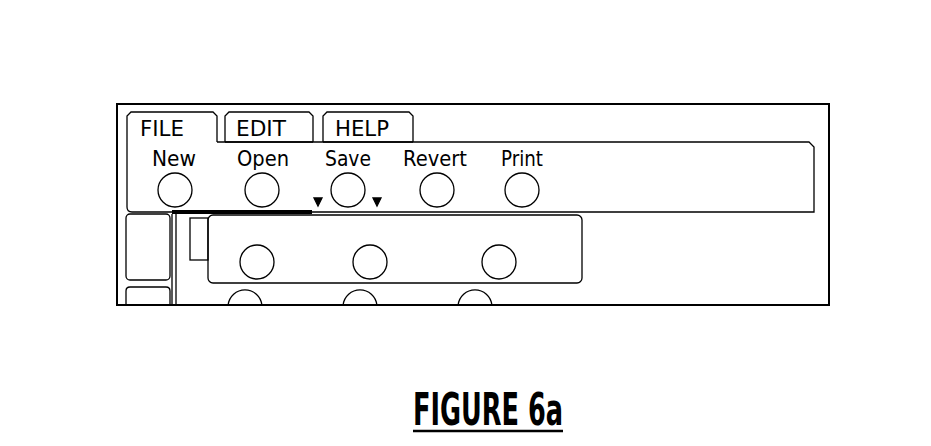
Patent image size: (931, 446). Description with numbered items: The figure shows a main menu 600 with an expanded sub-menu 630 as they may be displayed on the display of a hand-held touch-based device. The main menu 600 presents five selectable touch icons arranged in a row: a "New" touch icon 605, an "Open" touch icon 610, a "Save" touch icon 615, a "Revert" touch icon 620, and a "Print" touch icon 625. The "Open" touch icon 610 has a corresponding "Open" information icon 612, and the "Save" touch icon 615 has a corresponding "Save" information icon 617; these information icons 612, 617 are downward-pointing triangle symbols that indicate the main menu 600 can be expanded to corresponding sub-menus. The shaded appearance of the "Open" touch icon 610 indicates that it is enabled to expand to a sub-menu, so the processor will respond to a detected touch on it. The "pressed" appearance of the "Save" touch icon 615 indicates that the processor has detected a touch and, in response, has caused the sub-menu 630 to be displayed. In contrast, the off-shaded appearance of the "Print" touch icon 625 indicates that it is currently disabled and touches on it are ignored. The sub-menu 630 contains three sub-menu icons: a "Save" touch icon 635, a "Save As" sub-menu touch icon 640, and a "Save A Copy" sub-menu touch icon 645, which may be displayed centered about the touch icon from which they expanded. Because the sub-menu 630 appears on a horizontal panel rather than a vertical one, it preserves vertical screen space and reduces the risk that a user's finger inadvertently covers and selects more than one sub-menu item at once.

The main menu 600 is at (138, 132).
The "New" touch icon 605 is at (187, 183).
The "Open" touch icon 610 is at (318, 198).
The "Open" information icon 612 is at (262, 180).
The "Save" touch icon 615 is at (378, 200).
The "Save" information icon 617 is at (360, 192).
The "Revert" touch icon 620 is at (440, 193).
The "Print" touch icon 625 is at (525, 190).
The sub-menu 630 is at (583, 258).
The "Save" touch icon 635 is at (262, 262).
The "Save As" sub-menu touch icon 640 is at (370, 262).
The "Save A Copy" sub-menu touch icon 645 is at (500, 262).